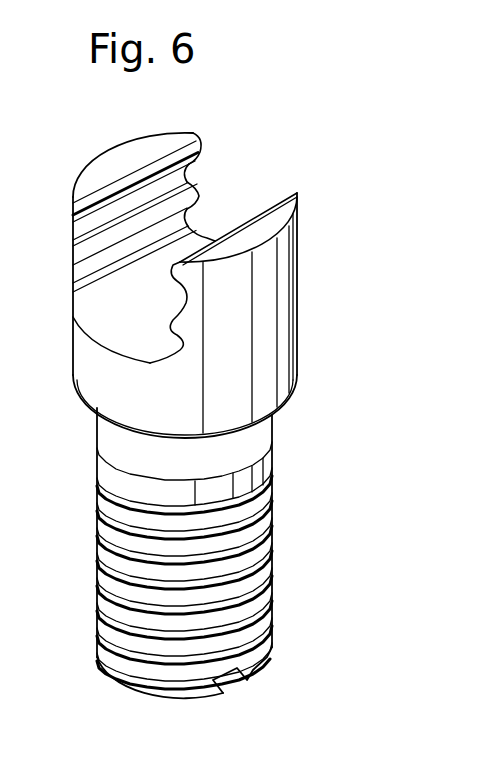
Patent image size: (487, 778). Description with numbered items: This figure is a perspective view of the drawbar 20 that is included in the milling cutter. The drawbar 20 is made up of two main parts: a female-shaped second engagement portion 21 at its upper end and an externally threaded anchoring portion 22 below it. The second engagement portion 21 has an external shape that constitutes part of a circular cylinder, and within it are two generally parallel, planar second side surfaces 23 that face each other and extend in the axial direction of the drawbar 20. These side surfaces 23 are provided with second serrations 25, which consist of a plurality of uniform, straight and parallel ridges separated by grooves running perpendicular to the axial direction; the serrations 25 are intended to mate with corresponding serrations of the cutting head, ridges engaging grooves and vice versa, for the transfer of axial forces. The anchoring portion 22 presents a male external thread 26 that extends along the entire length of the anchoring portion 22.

The drawbar 20 is at (318, 355).
The second engagement portion 21 is at (307, 254).
The anchoring portion 22 is at (285, 544).
The second side surfaces 23 is at (203, 192).
The second serrations 25 is at (199, 133).
The external thread 26 is at (258, 611).